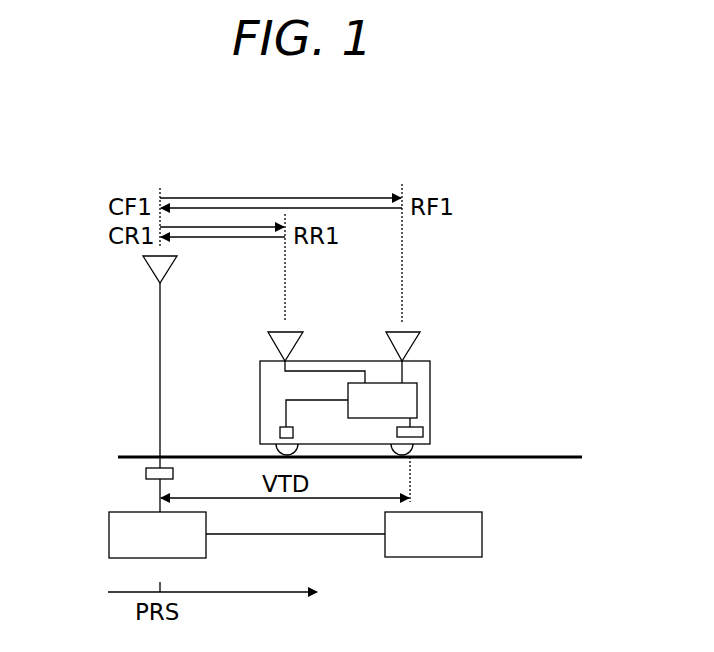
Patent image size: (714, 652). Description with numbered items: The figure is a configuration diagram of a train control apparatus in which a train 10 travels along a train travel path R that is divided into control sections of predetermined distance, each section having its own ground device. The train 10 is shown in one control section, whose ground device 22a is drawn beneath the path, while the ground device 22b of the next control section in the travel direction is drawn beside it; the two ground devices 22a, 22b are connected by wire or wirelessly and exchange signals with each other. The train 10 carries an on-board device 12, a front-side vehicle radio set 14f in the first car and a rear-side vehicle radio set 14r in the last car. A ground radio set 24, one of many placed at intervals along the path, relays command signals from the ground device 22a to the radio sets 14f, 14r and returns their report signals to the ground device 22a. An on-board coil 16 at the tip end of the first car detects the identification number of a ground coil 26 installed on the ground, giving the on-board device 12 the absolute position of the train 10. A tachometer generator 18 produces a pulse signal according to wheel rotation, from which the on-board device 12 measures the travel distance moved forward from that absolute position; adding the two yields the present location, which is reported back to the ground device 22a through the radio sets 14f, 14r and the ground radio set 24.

The train 10 is at (431, 378).
The on-board device 12 is at (418, 406).
The rear-side vehicle radio set 14r is at (290, 330).
The front-side vehicle radio set 14f is at (406, 330).
The on-board coil 16 is at (424, 432).
The tachometer generator 18 is at (280, 432).
The ground device 22a is at (109, 535).
The ground device 22b is at (483, 532).
The ground radio set 24 is at (144, 266).
The ground coil 26 is at (146, 471).
The train travel path R is at (537, 457).